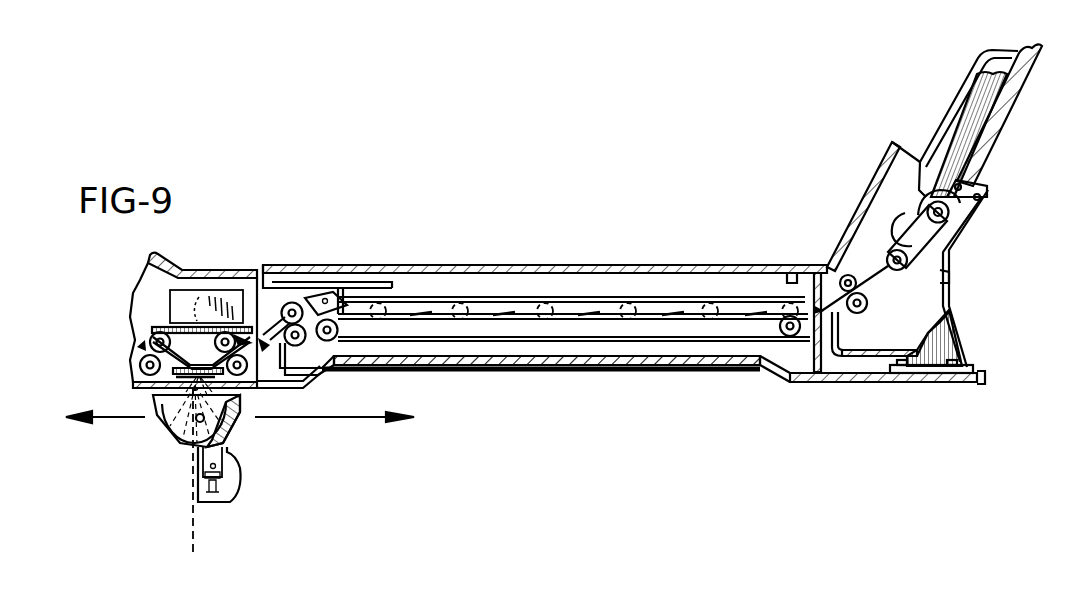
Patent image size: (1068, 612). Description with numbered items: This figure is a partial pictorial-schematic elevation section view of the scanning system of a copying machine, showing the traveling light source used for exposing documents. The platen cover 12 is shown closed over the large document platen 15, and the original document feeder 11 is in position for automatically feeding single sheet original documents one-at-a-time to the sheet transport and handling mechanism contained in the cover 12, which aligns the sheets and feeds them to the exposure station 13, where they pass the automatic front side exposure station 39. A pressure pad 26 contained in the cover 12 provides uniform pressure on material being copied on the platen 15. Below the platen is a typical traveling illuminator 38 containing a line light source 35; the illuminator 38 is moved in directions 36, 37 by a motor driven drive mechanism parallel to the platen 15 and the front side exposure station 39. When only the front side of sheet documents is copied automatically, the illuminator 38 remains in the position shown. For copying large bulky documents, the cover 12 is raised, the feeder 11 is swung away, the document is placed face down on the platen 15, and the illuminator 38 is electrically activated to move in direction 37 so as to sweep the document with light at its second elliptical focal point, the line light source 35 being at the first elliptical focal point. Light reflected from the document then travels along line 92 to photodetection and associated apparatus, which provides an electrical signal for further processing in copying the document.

The original document feeder 11 is at (843, 190).
The platen cover 12 is at (586, 258).
The exposure station 13 is at (196, 241).
The platen 15 is at (518, 385).
The pressure pad 26 is at (669, 362).
The line light source 35 is at (199, 423).
The illuminator movement direction 36 is at (118, 417).
The illuminator movement direction 37 is at (325, 417).
The traveling illuminator 38 is at (237, 426).
The automatic front side exposure station 39 is at (176, 379).
The optical scanning signal line 92 is at (191, 537).